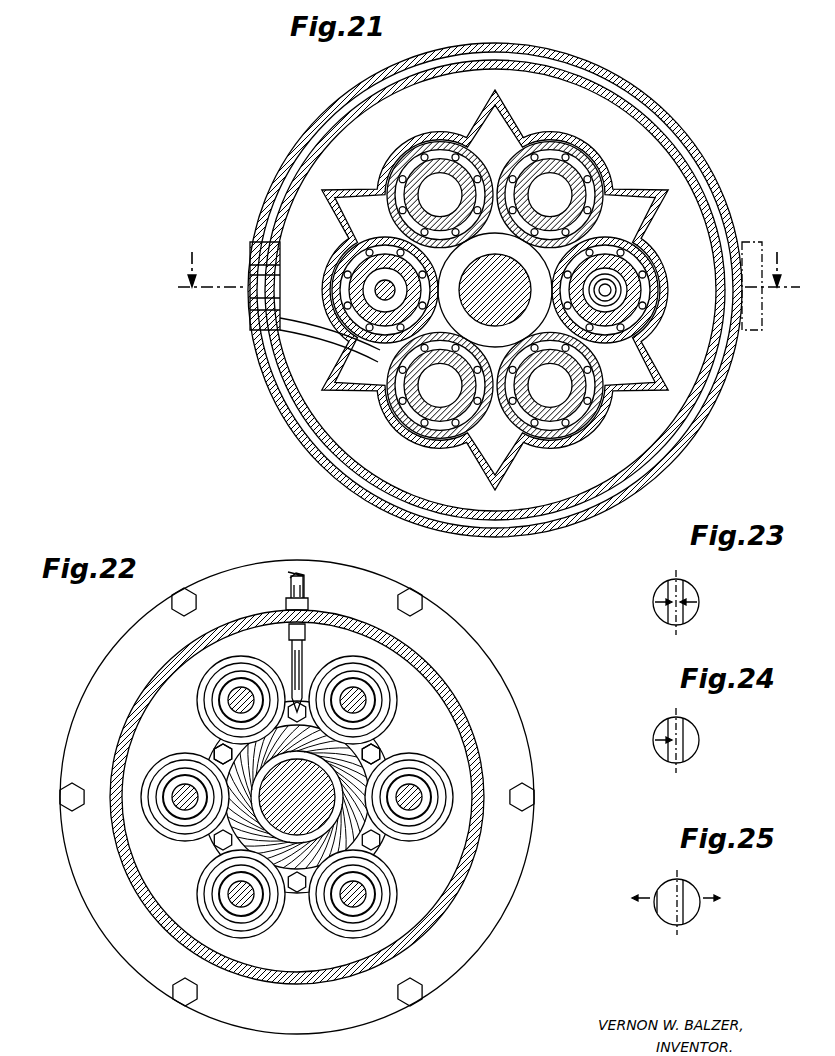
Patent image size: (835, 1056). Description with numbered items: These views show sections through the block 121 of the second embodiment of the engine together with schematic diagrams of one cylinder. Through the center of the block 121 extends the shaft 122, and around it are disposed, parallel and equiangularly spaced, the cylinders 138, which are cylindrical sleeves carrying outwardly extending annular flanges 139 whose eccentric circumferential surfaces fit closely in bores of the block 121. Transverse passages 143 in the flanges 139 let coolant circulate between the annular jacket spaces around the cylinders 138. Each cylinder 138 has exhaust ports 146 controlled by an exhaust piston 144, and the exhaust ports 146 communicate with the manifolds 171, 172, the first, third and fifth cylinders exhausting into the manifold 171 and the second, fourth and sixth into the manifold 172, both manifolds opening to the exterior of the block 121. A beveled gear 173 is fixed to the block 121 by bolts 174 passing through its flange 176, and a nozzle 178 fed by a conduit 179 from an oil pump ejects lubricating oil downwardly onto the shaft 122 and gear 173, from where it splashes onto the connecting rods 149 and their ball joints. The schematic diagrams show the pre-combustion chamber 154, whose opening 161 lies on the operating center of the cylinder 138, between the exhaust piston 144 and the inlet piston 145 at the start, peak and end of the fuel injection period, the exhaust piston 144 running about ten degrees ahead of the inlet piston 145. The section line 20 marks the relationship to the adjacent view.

In FIG. 21, the section line 20- 20 is at (489, 260).
In FIG. 21, the block 121 is at (494, 522).
In FIG. 22, the block 121 is at (310, 957).
In FIG. 21, the shaft 122 is at (474, 260).
In FIG. 22, the shaft 122 is at (306, 797).
In FIG. 22, the cylinders 138 is at (345, 660).
In FIG. 21, the annular flanges 139 is at (342, 262).
In FIG. 21, the transverse passages 143 is at (402, 152).
In FIG. 23, the exhaust piston 144 is at (660, 612).
In FIG. 24, the exhaust piston 144 is at (660, 750).
In FIG. 25, the exhaust piston 144 is at (660, 906).
In FIG. 23, the inlet piston 145 is at (692, 608).
In FIG. 24, the inlet piston 145 is at (692, 746).
In FIG. 25, the inlet piston 145 is at (692, 906).
In FIG. 21, the exhaust ports 146 is at (452, 142).
In FIG. 22, the connecting rods 149 is at (230, 701).
In FIG. 23, the pre-combustion chamber 154 is at (676, 580).
In FIG. 23, the opening 161 is at (690, 594).
In FIG. 24, the opening 161 is at (690, 732).
In FIG. 25, the opening 161 is at (670, 884).
In FIG. 21, the manifold 171 is at (548, 78).
In FIG. 21, the manifold 172 is at (375, 457).
In FIG. 22, the beveled gear 173 is at (216, 846).
In FIG. 22, the bolts 174 is at (216, 750).
In FIG. 22, the flange 176 is at (380, 750).
In FIG. 22, the nozzle 178 is at (291, 645).
In FIG. 22, the conduit 179 is at (306, 590).